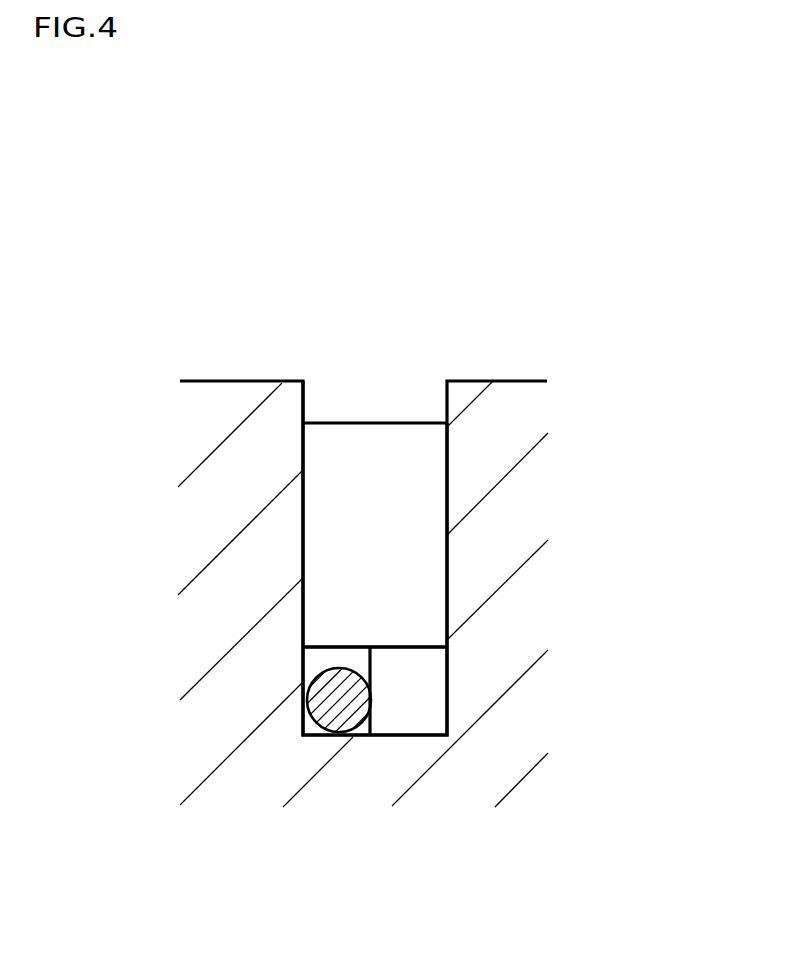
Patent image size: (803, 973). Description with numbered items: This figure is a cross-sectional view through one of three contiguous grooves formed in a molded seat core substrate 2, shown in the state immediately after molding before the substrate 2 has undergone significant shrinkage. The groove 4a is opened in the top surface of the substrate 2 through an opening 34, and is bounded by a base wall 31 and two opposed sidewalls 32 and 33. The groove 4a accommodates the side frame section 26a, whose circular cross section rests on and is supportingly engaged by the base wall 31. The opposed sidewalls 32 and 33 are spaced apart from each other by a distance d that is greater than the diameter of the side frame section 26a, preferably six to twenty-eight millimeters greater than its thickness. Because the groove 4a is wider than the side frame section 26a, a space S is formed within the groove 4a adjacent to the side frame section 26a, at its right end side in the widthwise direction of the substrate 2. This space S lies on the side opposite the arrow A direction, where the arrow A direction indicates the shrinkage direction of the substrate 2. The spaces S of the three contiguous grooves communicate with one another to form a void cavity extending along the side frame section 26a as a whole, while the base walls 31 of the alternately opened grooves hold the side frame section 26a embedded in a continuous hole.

The substrate 2 is at (512, 370).
The opening 34 is at (325, 407).
The sidewall 32 is at (303, 510).
The sidewall 33 is at (447, 515).
The groove 4a is at (447, 563).
The base wall 31 is at (430, 705).
The space S is at (405, 715).
The side frame section 26a is at (327, 705).
The distance d is at (445, 605).
The arrow A direction A is at (598, 525).